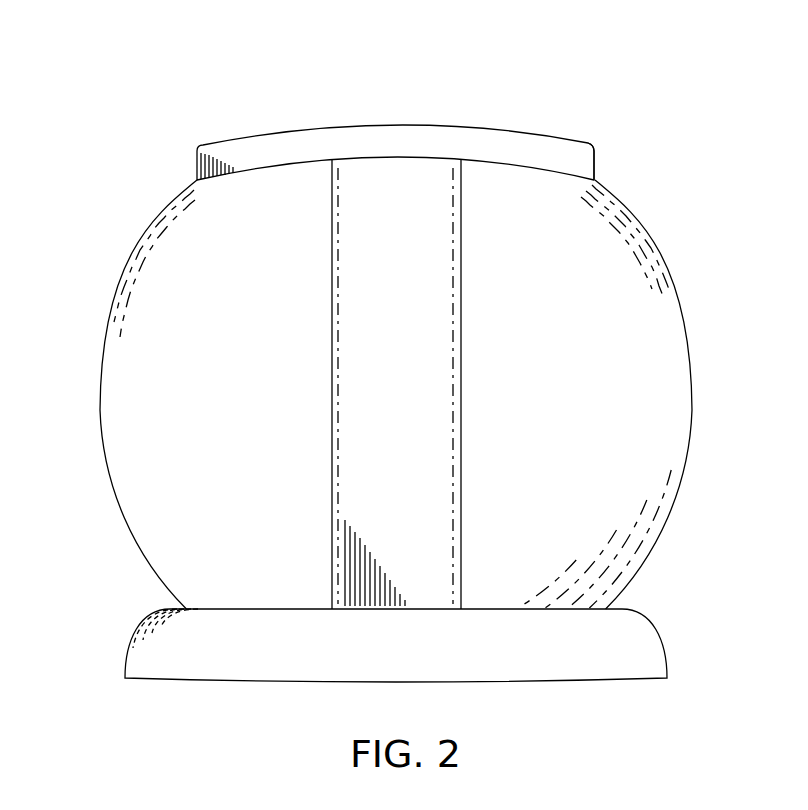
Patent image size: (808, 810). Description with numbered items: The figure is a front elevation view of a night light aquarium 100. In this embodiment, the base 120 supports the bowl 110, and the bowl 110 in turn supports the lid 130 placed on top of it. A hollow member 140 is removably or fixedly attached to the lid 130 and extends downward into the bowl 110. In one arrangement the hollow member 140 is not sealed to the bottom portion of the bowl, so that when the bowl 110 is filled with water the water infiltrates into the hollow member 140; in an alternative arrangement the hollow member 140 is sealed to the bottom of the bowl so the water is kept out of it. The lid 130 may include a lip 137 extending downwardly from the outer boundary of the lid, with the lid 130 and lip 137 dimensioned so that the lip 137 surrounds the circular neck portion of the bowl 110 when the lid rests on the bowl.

The night light aquarium 100 is at (118, 81).
The bowl 110 is at (678, 380).
The base 120 is at (411, 661).
The lid 130 is at (533, 125).
The lip 137 is at (580, 166).
The hollow member 140 is at (412, 395).